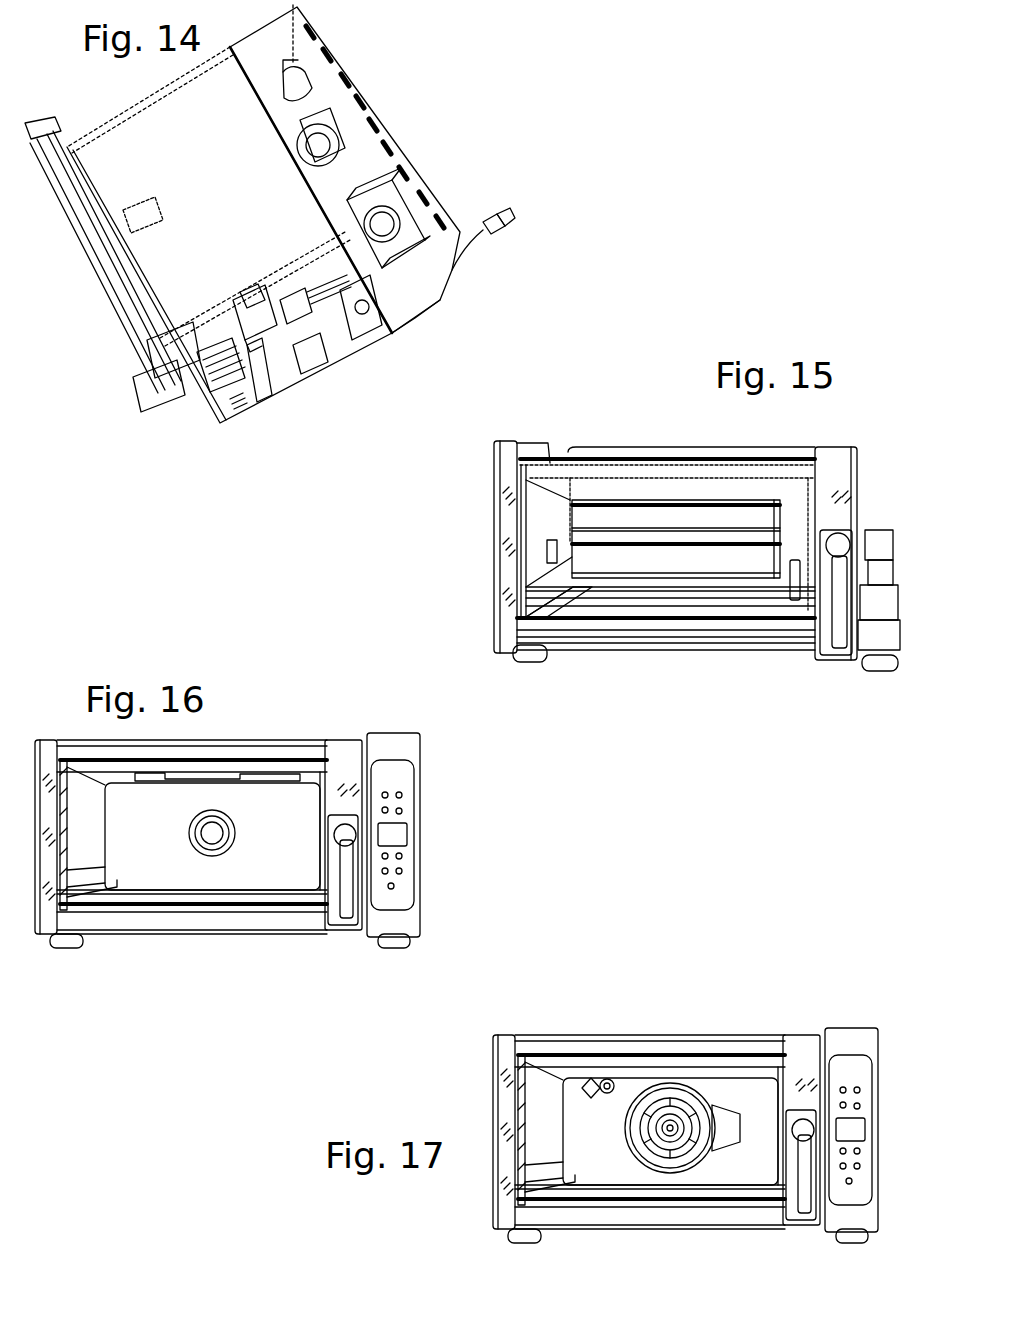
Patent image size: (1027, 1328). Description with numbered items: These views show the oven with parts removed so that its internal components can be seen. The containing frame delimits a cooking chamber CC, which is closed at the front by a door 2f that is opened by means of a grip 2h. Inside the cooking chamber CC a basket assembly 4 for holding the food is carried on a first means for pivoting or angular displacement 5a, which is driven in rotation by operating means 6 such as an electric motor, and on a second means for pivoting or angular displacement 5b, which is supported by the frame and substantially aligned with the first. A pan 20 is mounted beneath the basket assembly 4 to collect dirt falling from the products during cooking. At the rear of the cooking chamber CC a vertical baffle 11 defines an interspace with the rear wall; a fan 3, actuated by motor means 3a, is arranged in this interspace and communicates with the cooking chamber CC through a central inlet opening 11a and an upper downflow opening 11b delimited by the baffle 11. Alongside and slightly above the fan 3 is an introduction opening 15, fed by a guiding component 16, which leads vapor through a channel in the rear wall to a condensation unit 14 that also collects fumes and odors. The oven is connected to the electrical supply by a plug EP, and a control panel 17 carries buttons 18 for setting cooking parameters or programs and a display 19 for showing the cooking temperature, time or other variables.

In FIG. 14, the condensation unit 14 is at (352, 175).
In FIG. 14, the motor means 3a is at (335, 138).
In FIG. 14, the plug EP is at (514, 214).
In FIG. 14, the operating means 6 is at (267, 337).
In FIG. 15, the operating means 6 is at (867, 535).
In FIG. 15, the cooking chamber CC is at (623, 492).
In FIG. 16, the cooking chamber CC is at (183, 867).
In FIG. 15, the basket assembly 4 is at (642, 563).
In FIG. 15, the pan 20 is at (597, 607).
In FIG. 15, the second means for pivoting or angular displacement 5b is at (550, 540).
In FIG. 15, the first means for pivoting or angular displacement 5a is at (797, 600).
In FIG. 16, the baffle 11 is at (153, 853).
In FIG. 16, the inlet opening 11a is at (220, 860).
In FIG. 16, the downflow opening 11b is at (238, 778).
In FIG. 16, the grip 2h is at (350, 907).
In FIG. 16, the control panel 17 is at (400, 777).
In FIG. 17, the control panel 17 is at (858, 1083).
In FIG. 17, the door 2f is at (757, 1098).
In FIG. 17, the fan 3 is at (682, 1103).
In FIG. 17, the introduction opening 15 is at (607, 1080).
In FIG. 17, the component for guiding or introducing 16 is at (588, 1082).
In FIG. 17, the display 19 is at (860, 1123).
In FIG. 17, the buttons 18 is at (857, 1151).